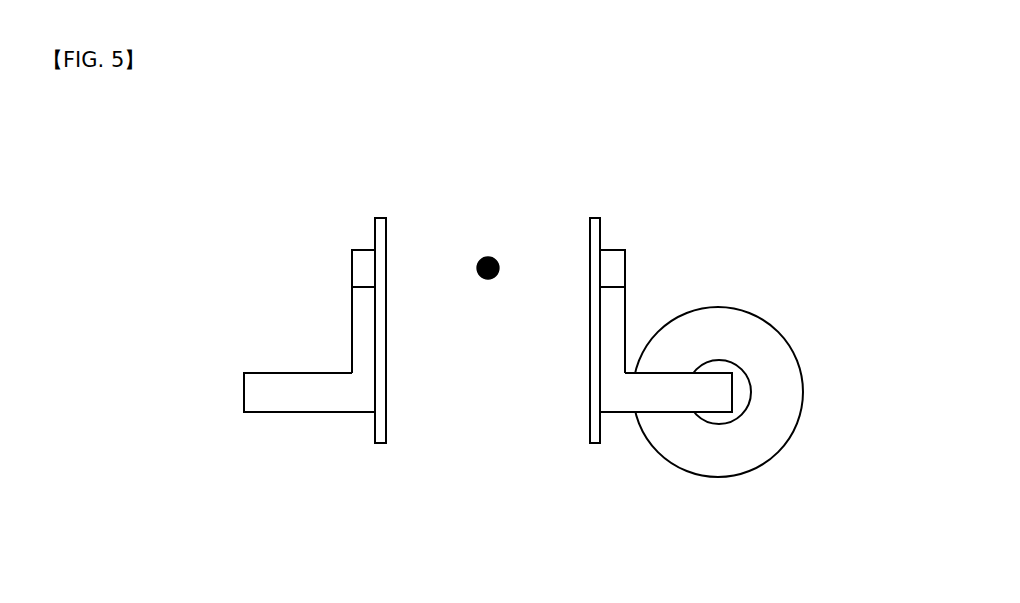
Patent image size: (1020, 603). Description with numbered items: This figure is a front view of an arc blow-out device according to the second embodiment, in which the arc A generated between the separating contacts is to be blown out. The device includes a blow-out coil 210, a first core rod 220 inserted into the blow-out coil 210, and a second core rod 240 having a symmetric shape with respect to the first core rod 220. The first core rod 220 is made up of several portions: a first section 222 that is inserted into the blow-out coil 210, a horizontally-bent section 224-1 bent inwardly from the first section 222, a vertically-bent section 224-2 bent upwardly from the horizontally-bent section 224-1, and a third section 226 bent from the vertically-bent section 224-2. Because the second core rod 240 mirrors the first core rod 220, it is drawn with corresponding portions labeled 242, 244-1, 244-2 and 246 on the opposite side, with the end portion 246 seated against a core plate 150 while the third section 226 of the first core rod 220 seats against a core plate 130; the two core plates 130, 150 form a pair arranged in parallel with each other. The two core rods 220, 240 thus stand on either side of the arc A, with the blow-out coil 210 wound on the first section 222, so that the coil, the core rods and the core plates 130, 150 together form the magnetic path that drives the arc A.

The core plate 130 is at (596, 350).
The core plate 150 is at (380, 350).
The blow-out coil 210 is at (788, 395).
The first core rod 220 is at (627, 156).
The first section 222 is at (733, 391).
The horizontally-bent section 224-1 is at (663, 383).
The vertically-bent section 224-2 is at (617, 318).
The third section 226 is at (612, 263).
The second core rod 240 is at (348, 156).
The end portion of second bracket 242 is at (243, 392).
The horizontal arm of second bracket 244-1 is at (310, 382).
The vertical arm of second bracket 244-2 is at (353, 313).
The fixing portion of second bracket 246 is at (365, 263).
The arc A is at (490, 257).